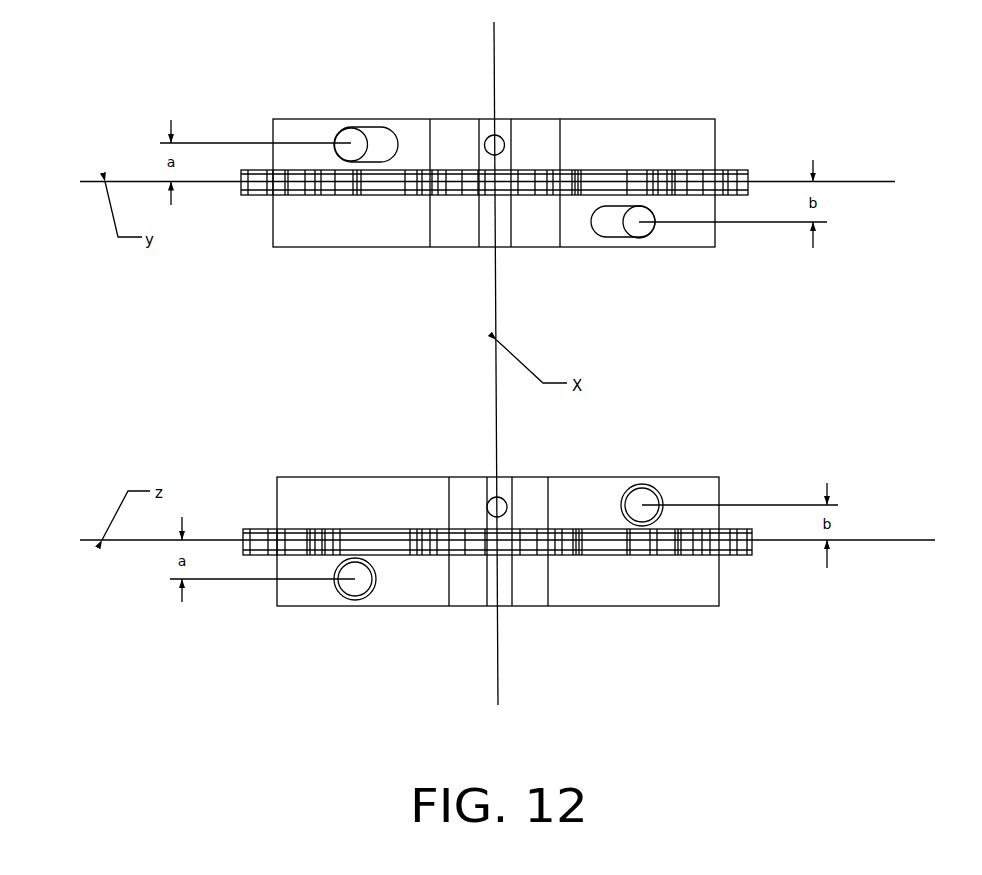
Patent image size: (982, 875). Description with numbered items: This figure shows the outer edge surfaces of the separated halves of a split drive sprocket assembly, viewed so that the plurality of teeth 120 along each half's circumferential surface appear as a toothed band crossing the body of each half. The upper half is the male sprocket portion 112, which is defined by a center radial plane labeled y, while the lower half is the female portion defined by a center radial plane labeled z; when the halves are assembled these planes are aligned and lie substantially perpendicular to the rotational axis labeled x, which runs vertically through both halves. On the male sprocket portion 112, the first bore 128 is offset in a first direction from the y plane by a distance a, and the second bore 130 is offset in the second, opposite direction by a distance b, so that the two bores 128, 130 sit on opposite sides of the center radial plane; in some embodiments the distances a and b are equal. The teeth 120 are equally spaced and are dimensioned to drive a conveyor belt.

The male sprocket portion 112 is at (494, 224).
The teeth 120 is at (494, 135).
The first bore 128 is at (394, 92).
The second bore 130 is at (658, 262).